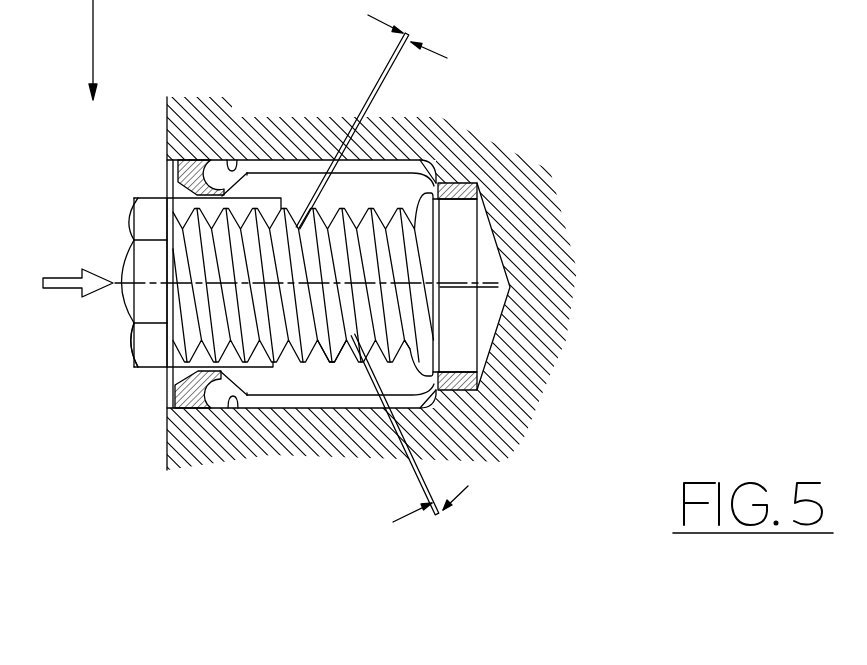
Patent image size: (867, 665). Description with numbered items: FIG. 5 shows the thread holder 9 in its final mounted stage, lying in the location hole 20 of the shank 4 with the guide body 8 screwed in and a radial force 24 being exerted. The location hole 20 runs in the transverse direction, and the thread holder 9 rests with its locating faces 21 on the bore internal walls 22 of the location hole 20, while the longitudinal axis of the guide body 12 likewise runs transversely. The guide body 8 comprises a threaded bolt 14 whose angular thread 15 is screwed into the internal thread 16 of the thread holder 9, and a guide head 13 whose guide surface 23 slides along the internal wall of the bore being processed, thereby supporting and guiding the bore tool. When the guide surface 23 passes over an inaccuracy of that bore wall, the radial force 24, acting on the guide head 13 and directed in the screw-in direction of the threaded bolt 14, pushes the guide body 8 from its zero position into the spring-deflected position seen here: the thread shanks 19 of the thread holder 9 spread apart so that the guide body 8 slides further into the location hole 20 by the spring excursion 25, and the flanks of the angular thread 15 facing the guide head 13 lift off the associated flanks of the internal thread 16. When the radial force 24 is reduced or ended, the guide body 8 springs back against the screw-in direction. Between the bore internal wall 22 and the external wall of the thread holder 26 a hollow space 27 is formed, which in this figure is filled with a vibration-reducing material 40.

The shank 4 is at (172, 107).
The guide body 8 is at (250, 243).
The thread holder 9 is at (451, 330).
The guide body 12 is at (488, 289).
The guide head 13 is at (147, 343).
The threaded bolt 14 is at (363, 268).
The angular thread 15 is at (411, 244).
The internal thread 16 is at (325, 360).
The thread shanks 19 is at (426, 172).
The location hole 20 is at (455, 145).
The locating faces 21 is at (190, 171).
The bore internal walls 22 is at (232, 166).
The guide surface 23 is at (130, 247).
The radial force 24 is at (58, 285).
The spring excursion 25 is at (410, 32).
The external wall of the thread holder 26 is at (307, 158).
The hollow space 27 is at (218, 184).
The vibration-reducing material 40 is at (249, 173).